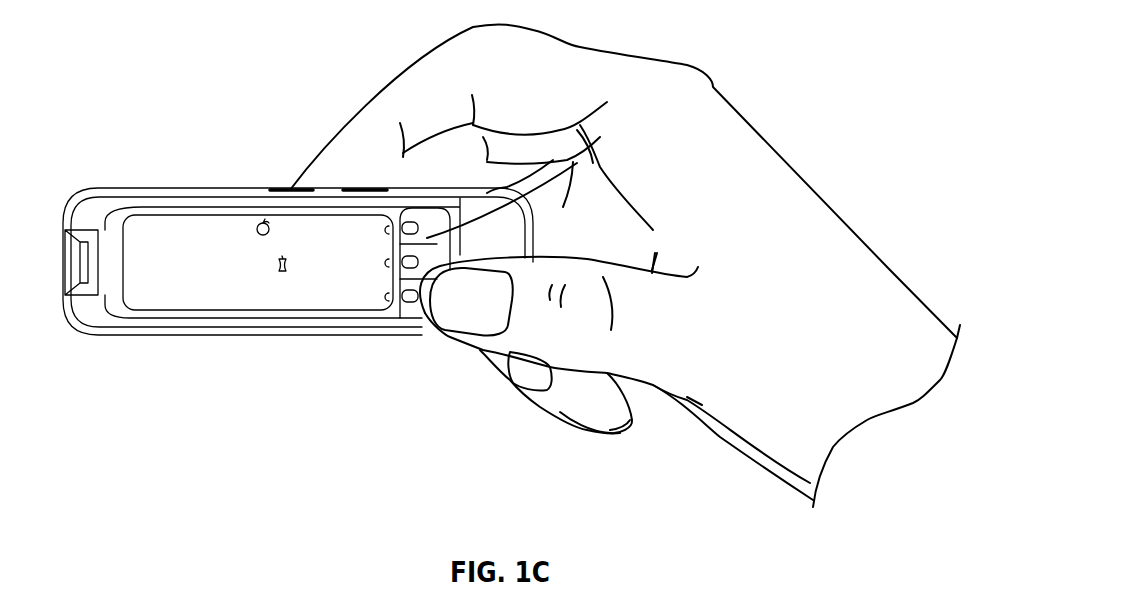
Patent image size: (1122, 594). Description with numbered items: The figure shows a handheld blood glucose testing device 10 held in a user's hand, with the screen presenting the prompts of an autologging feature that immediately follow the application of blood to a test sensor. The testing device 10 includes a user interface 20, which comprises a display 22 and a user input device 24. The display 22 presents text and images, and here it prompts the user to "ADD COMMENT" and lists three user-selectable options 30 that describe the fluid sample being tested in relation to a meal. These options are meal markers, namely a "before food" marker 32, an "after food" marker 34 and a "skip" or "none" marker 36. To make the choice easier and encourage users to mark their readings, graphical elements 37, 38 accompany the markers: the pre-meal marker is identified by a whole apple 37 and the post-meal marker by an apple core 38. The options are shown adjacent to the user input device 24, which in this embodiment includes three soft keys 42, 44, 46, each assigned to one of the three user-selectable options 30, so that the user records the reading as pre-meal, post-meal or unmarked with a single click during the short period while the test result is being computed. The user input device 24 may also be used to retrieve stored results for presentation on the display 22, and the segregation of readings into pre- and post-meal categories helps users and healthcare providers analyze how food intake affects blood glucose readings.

The testing device 10 is at (118, 349).
The user interface 20 is at (190, 233).
The display 22 is at (170, 293).
The user input device 24 is at (480, 192).
The user-selectable options 30 is at (307, 293).
The before food marker 32 is at (291, 218).
The after food marker 34 is at (298, 282).
The skip marker 36 is at (361, 307).
The graphical element 37 is at (262, 223).
The graphical element 38 is at (276, 258).
The soft key 42 is at (410, 221).
The soft key 44 is at (440, 262).
The soft key 46 is at (410, 303).